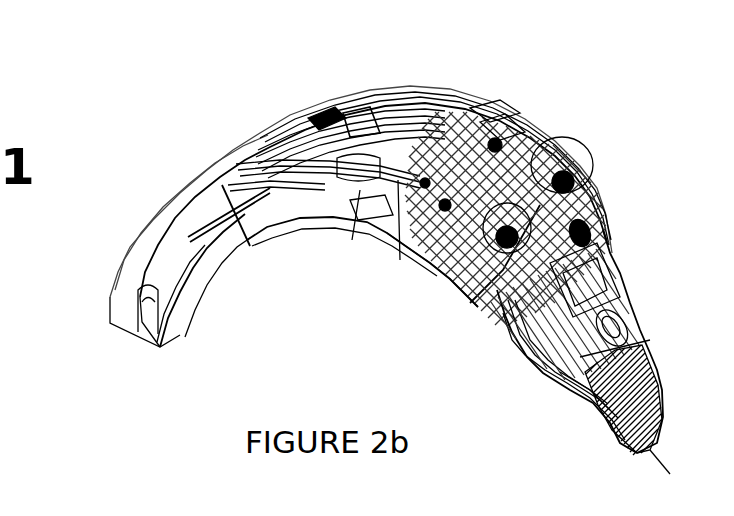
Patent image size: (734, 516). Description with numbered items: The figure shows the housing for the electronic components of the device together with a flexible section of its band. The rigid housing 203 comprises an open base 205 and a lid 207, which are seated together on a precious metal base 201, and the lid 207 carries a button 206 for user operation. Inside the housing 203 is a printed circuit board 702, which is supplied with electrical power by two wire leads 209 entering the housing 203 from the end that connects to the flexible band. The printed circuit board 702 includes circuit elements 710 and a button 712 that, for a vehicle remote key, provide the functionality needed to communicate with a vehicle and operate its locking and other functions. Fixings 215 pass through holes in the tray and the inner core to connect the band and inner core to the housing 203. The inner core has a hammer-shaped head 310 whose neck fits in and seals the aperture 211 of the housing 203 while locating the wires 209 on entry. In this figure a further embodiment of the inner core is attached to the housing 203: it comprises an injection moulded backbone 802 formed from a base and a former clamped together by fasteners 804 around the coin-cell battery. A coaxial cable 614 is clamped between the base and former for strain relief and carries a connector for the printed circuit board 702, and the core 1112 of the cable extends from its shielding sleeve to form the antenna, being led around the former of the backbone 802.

The precious metal base 201 is at (420, 267).
The rigid housing 203 is at (370, 215).
The open base 205 is at (455, 262).
The button 206 is at (287, 113).
The lid 207 is at (480, 100).
The wire leads 209 is at (372, 130).
The aperture 211 is at (565, 176).
The fixings 215 is at (574, 250).
The head 310 is at (560, 212).
The coaxial cable 614 is at (500, 110).
The printed circuit board 702 is at (565, 143).
The circuit elements 710 is at (465, 172).
The button 712 is at (332, 160).
The backbone 802 is at (636, 346).
The fasteners 804 is at (560, 274).
The core 1112 is at (660, 445).